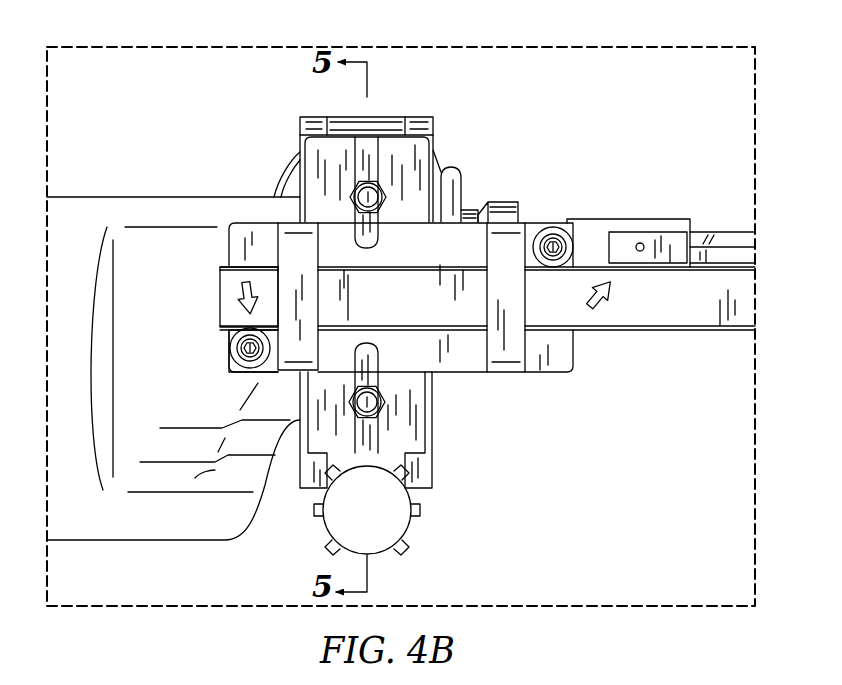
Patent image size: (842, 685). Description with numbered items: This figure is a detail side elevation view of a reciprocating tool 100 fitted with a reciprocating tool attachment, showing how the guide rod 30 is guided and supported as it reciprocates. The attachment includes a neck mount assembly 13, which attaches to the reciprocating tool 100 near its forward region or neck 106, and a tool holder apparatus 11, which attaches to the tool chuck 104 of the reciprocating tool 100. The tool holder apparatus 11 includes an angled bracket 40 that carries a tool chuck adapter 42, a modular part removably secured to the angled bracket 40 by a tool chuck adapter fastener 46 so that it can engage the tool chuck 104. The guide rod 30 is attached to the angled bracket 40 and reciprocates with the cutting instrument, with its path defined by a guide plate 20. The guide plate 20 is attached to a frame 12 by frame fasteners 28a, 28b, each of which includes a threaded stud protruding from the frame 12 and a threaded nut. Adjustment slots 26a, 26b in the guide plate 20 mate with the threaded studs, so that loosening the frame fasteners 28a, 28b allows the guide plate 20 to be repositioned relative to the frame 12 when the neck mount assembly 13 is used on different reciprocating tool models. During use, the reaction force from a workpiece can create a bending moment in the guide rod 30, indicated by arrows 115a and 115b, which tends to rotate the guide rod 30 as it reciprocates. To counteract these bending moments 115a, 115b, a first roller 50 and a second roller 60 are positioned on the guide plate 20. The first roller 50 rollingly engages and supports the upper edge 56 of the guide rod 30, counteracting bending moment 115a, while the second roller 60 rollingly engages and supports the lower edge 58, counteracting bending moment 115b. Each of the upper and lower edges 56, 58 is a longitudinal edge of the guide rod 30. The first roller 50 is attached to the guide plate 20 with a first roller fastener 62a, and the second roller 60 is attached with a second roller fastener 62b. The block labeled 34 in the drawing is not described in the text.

The reciprocating tool 100 is at (185, 145).
The tool holder apparatus 11 is at (661, 196).
The frame 12 is at (390, 145).
The neck mount assembly 13 is at (263, 153).
The guide plate 20 is at (420, 147).
The adjustment slot 26a is at (367, 150).
The adjustment slot 26b is at (367, 449).
The frame fastener 28a is at (352, 192).
The frame fastener 28b is at (380, 406).
The guide rod 30 is at (720, 315).
The left block 34 is at (220, 305).
The angled bracket 40 is at (716, 232).
The tool chuck adapter 42 is at (657, 219).
The tool chuck adapter fastener 46 is at (637, 245).
The first roller 50 is at (566, 230).
The upper edge 56 is at (562, 269).
The lower edge 58 is at (608, 331).
The second roller 60 is at (236, 365).
The first roller fastener 62a is at (551, 238).
The second roller fastener 62b is at (250, 358).
The tool chuck 104 is at (515, 202).
The neck 106 is at (463, 178).
The bending moment 115a is at (606, 298).
The bending moment 115b is at (243, 288).